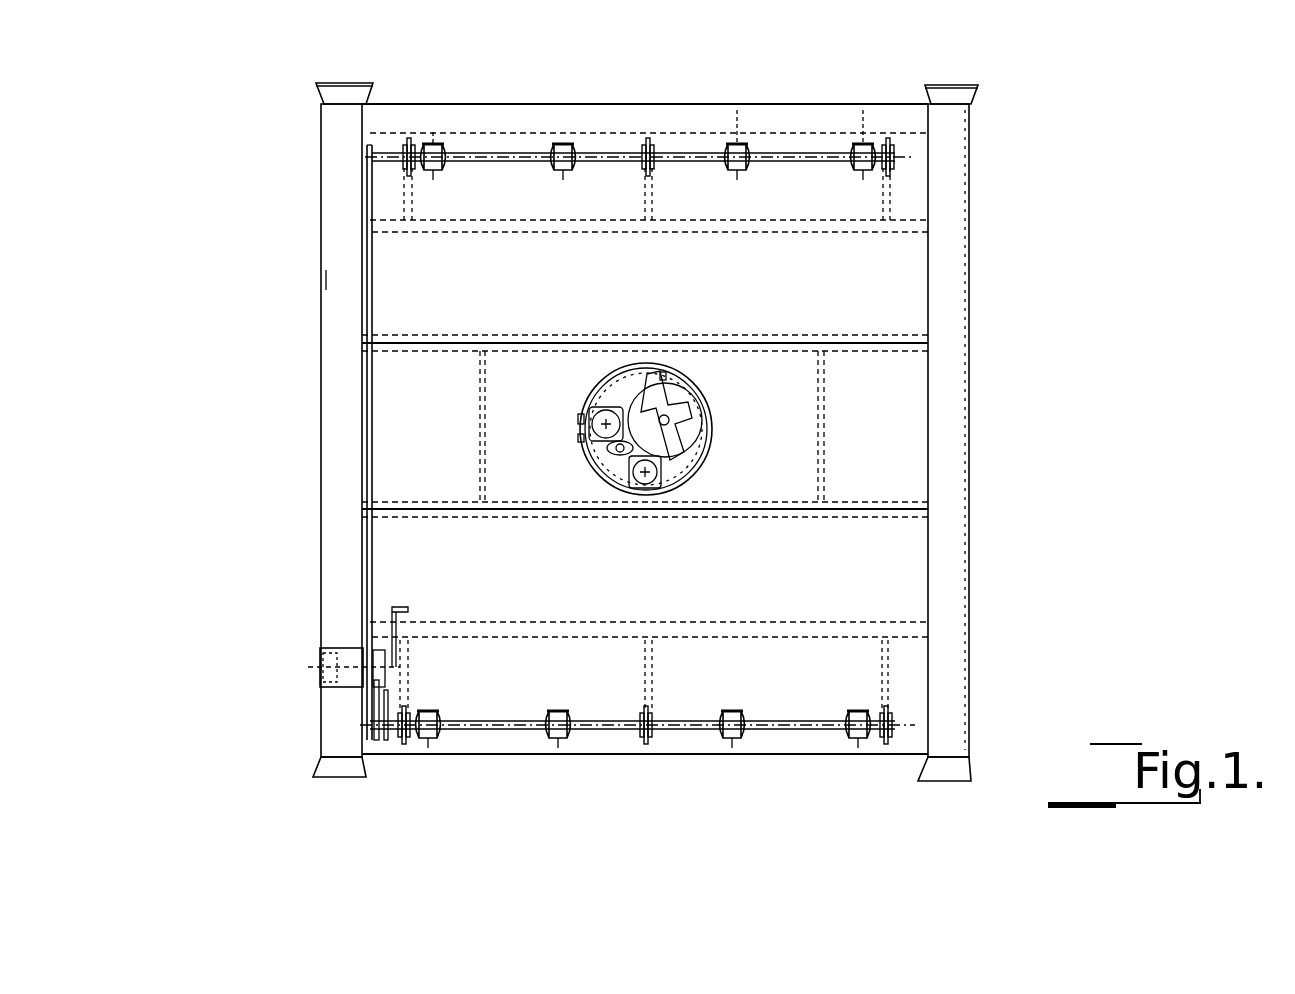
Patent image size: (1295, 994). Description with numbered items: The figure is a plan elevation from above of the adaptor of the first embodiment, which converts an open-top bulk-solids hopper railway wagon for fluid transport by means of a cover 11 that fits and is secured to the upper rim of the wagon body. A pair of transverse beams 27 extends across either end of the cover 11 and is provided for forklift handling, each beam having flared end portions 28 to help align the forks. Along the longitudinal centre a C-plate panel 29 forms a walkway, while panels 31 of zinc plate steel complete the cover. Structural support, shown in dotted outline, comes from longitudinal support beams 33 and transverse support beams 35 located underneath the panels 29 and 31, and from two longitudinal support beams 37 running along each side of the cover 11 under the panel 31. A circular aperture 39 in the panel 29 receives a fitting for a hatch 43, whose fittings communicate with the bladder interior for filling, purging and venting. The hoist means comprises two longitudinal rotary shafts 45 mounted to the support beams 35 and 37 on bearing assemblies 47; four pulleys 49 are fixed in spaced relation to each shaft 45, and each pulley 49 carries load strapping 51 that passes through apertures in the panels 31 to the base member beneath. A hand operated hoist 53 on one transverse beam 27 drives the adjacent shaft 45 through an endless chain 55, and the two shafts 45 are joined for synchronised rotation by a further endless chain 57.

The cover 11 is at (1158, 126).
The transverse beams 27 is at (322, 423).
The flared end portions 28 is at (978, 95).
The C-plate panel 29 is at (607, 426).
The panels 31 is at (649, 405).
The longitudinal support beams 33 is at (863, 338).
The transverse support beams 35 is at (893, 197).
The longitudinal support beams 37 is at (805, 120).
The circular aperture 39 is at (587, 460).
The hatch 43 is at (617, 383).
The longitudinal rotary shafts 45 is at (693, 732).
The bearing assemblies 47 is at (403, 742).
The pulleys 49 is at (563, 742).
The load strapping 51 is at (428, 745).
The hand operated hoist 53 is at (305, 674).
The endless chain 55 is at (385, 742).
The endless chain 57 is at (366, 583).